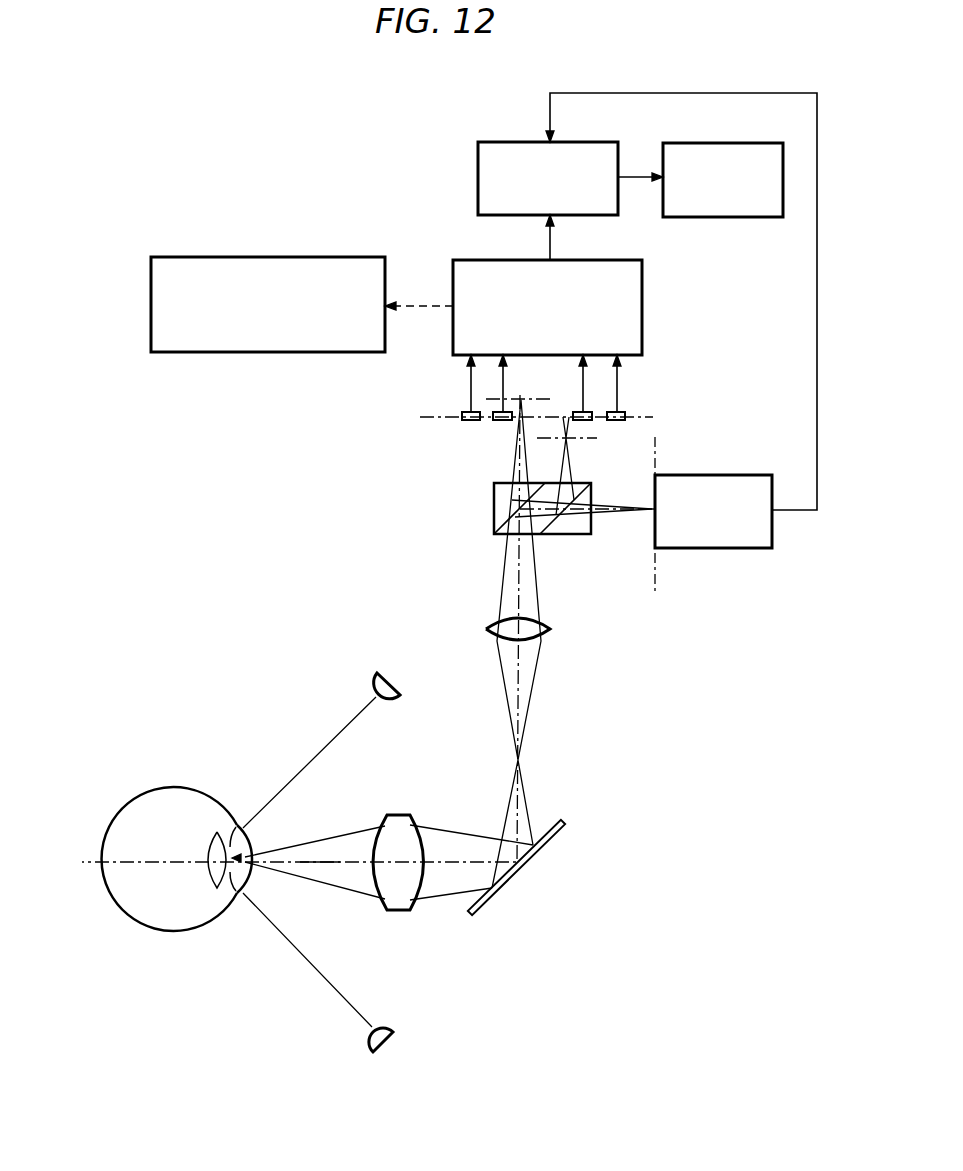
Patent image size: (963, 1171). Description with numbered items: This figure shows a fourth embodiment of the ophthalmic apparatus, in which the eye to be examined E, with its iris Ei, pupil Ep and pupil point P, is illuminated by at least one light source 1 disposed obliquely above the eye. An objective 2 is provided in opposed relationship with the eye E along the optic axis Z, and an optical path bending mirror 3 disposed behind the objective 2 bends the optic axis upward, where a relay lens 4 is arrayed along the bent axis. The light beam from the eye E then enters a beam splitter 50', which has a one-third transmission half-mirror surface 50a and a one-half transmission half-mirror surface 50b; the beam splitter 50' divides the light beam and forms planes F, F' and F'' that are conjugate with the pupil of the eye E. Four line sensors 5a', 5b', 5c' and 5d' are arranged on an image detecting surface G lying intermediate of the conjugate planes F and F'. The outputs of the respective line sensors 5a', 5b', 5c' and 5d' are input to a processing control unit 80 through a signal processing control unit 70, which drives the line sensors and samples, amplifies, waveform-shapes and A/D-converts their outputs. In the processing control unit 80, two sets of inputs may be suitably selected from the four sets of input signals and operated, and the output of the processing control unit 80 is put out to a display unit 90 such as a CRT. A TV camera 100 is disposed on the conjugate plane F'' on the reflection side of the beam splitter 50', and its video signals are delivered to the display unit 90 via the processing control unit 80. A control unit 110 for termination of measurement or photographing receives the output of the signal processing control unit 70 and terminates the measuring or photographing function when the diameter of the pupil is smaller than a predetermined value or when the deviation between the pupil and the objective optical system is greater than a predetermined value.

The light source 1 is at (389, 679).
The objective 2 is at (399, 815).
The optical path bending mirror 3 is at (538, 856).
The relay lens 4 is at (550, 629).
The line sensor 5a' is at (446, 395).
The line sensor 5b' is at (482, 436).
The line sensor 5c' is at (620, 395).
The line sensor 5d' is at (647, 413).
The beam splitter 50' is at (514, 506).
The one-third transmission half-mirror surface 50a is at (505, 522).
The one-half transmission half-mirror surface 50b is at (552, 527).
The signal processing control unit 70 is at (643, 280).
The processing control unit 80 is at (509, 142).
The display unit 90 is at (722, 143).
The TV camera 100 is at (718, 475).
The control unit for termination of measurement or photographing 110 is at (284, 257).
The eye to be examined E is at (172, 787).
The iris Ei is at (239, 826).
The pupil Ep is at (239, 893).
The pupil center P is at (235, 844).
The optic axis Z is at (328, 866).
The image detecting surface G is at (432, 417).
The conjugate plane F is at (527, 399).
The conjugate plane F' is at (577, 437).
The conjugate plane F'' is at (658, 523).